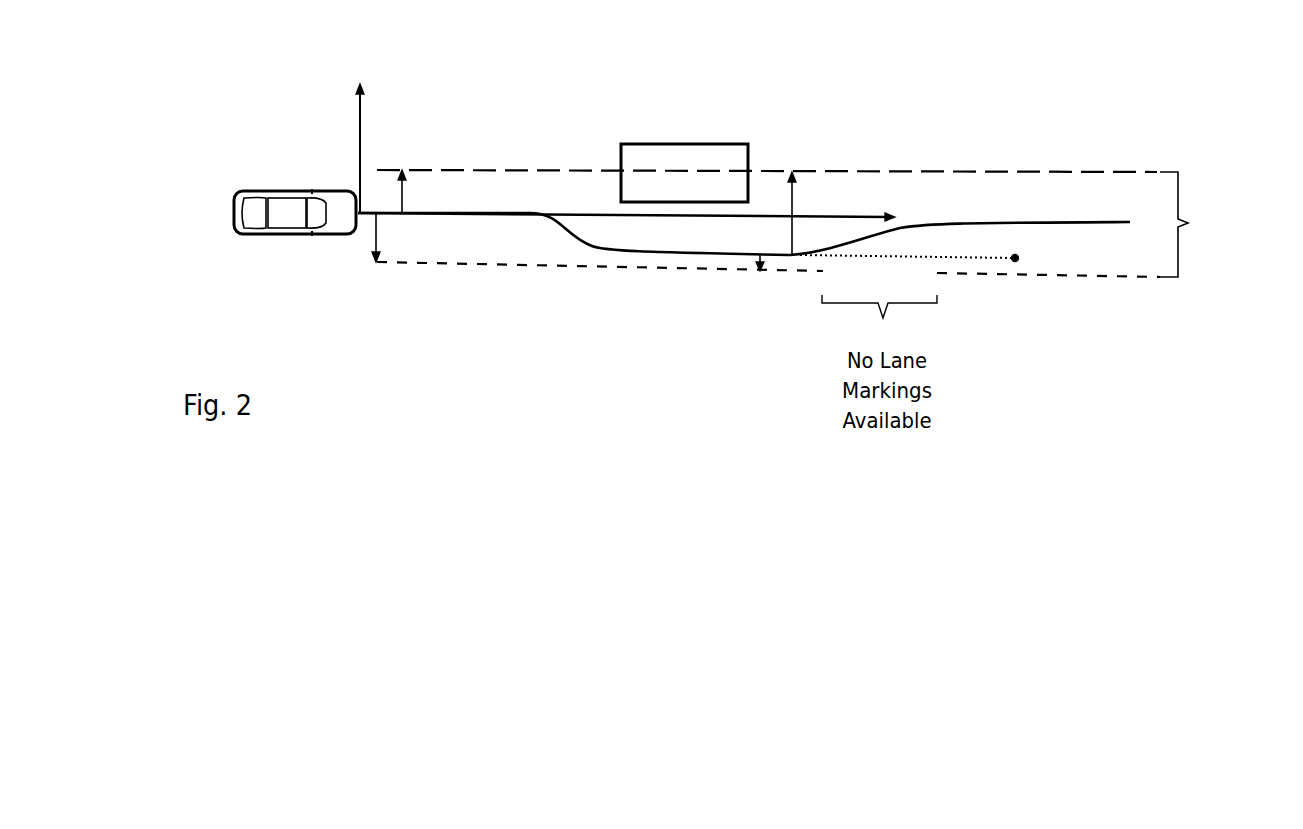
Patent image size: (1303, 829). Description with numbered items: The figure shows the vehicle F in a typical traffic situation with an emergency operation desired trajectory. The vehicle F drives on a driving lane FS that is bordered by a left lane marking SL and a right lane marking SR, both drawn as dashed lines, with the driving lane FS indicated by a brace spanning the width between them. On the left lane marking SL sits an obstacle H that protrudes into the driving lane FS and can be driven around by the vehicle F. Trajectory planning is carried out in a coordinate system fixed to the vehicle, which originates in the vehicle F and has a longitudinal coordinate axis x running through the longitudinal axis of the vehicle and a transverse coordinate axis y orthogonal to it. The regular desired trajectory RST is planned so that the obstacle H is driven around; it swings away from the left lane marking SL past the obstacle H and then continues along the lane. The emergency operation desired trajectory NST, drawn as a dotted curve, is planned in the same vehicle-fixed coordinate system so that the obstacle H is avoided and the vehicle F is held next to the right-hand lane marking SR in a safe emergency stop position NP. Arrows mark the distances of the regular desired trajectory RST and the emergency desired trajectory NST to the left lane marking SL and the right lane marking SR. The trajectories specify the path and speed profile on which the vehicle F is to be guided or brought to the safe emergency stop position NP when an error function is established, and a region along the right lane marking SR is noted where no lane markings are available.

The vehicle F is at (295, 212).
The obstacle H is at (684, 173).
The left lane marking SL is at (767, 159).
The right lane marking SR is at (768, 283).
The regular desired trajectory RST is at (744, 221).
The emergency operation desired trajectory NST is at (906, 245).
The safe emergency stop position NP is at (1032, 258).
The driving lane FS is at (1188, 224).
The longitudinal coordinate axis x is at (626, 208).
The transverse coordinate axis y is at (351, 136).